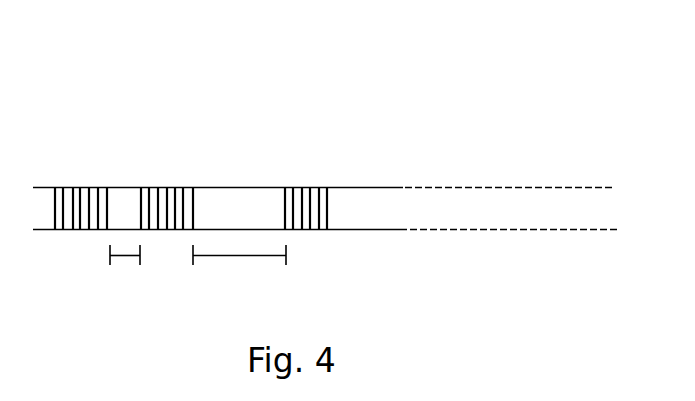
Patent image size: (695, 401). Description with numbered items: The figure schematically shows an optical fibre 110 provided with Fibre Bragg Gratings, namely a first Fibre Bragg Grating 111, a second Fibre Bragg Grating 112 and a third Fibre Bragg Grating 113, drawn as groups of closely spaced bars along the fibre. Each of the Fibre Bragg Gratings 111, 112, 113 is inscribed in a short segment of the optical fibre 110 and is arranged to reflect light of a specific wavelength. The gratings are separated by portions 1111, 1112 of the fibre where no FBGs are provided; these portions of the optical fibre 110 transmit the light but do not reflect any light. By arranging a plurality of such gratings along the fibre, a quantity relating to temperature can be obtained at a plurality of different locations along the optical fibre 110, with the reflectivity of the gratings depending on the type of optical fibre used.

The optical fibre 110 is at (303, 96).
The Fibre Bragg Grating 111 is at (80, 187).
The Fibre Bragg Grating 112 is at (165, 187).
The Fibre Bragg Grating 113 is at (310, 187).
The portion where no FBGs are provided 1111 is at (124, 256).
The portion where no FBGs are provided 1112 is at (237, 256).